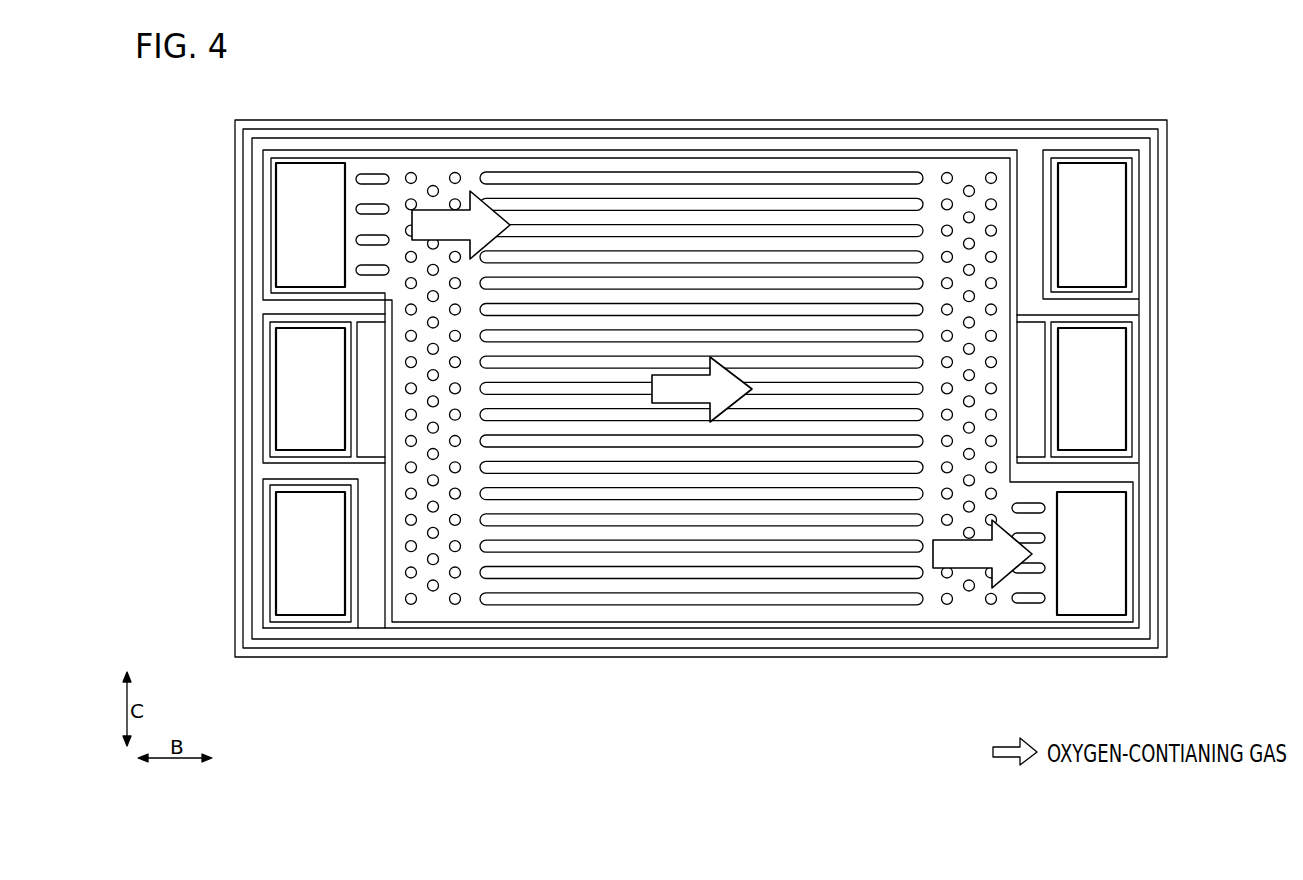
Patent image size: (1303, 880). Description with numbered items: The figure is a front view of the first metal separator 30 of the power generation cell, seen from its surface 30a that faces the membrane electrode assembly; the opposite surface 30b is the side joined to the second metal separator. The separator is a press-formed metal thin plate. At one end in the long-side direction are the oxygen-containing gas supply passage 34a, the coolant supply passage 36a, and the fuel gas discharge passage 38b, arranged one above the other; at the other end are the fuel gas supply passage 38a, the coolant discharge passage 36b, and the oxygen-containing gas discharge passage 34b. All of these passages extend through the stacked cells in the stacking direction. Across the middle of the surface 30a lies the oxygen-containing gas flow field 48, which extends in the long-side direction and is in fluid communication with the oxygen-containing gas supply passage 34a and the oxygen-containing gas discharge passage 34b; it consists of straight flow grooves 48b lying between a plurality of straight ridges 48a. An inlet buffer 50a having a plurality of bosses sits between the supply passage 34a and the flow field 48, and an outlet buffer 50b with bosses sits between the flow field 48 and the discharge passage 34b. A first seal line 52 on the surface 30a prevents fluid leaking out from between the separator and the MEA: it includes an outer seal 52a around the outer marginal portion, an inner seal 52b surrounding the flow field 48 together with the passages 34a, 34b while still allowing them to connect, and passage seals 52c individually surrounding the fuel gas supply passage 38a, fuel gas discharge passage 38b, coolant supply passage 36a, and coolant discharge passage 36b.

The first metal separator 30 is at (1098, 77).
The surface 30a is at (488, 635).
The surface 30b is at (530, 635).
The oxygen-containing gas supply passage 34a is at (290, 198).
The oxygen-containing gas discharge passage 34b is at (1112, 550).
The coolant supply passage 36a is at (292, 373).
The coolant discharge passage 36b is at (1110, 372).
The fuel gas supply passage 38a is at (1110, 198).
The fuel gas discharge passage 38b is at (292, 588).
The oxygen-containing gas flow field 48 is at (701, 319).
The ridges 48a is at (540, 205).
The flow grooves 48b is at (613, 192).
The inlet buffer 50a is at (431, 593).
The outlet buffer 50b is at (968, 591).
The first seal line 52 is at (896, 658).
The outer seal 52a is at (765, 640).
The inner seal 52b is at (725, 629).
The passage seals 52c is at (1130, 316).